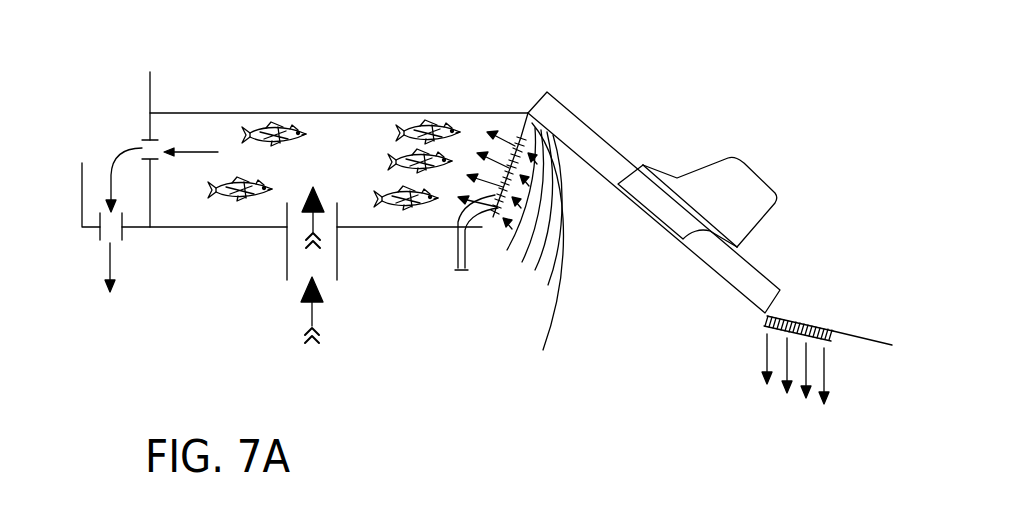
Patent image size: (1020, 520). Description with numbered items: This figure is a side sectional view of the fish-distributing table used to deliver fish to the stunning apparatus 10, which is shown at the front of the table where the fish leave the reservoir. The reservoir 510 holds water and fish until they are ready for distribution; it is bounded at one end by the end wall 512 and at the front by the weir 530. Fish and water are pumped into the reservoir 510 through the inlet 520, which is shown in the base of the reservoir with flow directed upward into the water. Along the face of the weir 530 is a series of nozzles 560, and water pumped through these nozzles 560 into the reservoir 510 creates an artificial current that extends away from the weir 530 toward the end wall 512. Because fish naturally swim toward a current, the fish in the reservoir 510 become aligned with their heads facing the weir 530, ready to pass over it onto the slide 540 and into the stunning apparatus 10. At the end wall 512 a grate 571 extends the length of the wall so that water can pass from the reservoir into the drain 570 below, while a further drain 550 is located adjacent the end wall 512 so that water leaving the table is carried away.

The stunning apparatus 10 is at (708, 190).
The reservoir 510 is at (367, 157).
The end wall 512 is at (152, 90).
The inlet 520 is at (337, 262).
The weir 530 is at (518, 125).
The slide 540 is at (878, 345).
The drain 550 is at (840, 335).
The nozzles 560 is at (473, 246).
The drain 570 is at (123, 234).
The grate 571 is at (144, 152).